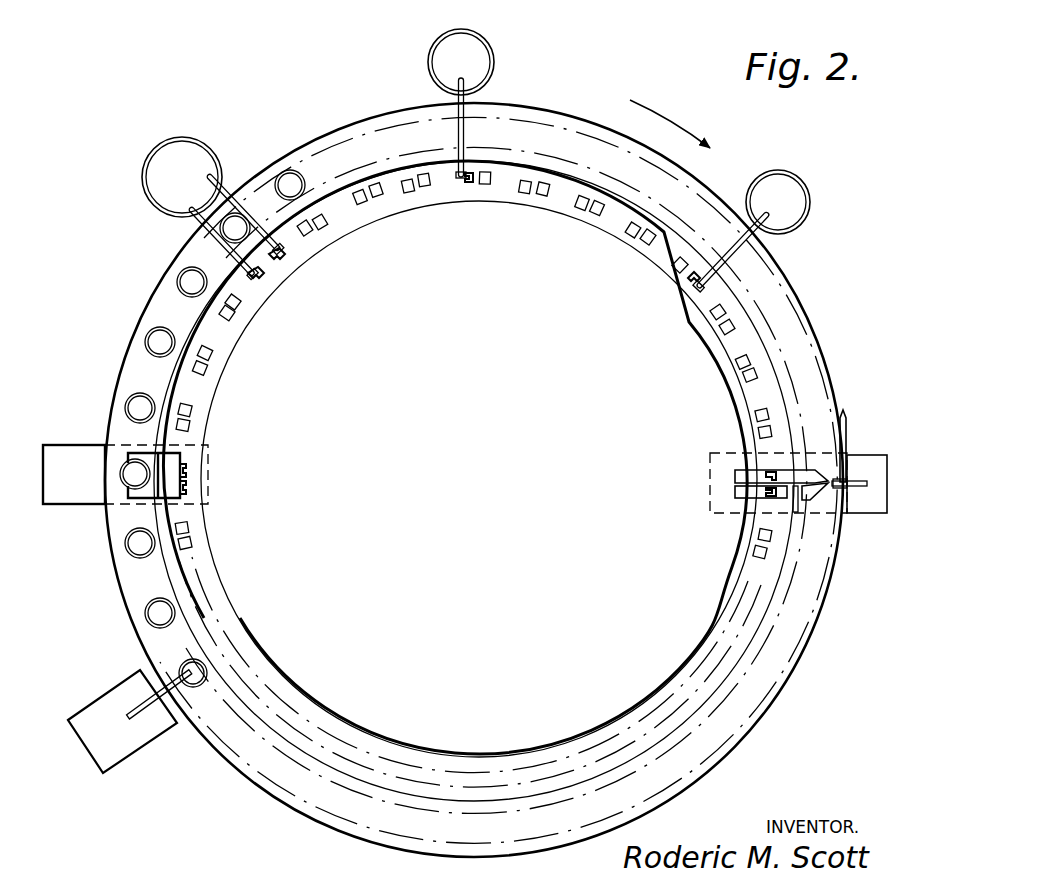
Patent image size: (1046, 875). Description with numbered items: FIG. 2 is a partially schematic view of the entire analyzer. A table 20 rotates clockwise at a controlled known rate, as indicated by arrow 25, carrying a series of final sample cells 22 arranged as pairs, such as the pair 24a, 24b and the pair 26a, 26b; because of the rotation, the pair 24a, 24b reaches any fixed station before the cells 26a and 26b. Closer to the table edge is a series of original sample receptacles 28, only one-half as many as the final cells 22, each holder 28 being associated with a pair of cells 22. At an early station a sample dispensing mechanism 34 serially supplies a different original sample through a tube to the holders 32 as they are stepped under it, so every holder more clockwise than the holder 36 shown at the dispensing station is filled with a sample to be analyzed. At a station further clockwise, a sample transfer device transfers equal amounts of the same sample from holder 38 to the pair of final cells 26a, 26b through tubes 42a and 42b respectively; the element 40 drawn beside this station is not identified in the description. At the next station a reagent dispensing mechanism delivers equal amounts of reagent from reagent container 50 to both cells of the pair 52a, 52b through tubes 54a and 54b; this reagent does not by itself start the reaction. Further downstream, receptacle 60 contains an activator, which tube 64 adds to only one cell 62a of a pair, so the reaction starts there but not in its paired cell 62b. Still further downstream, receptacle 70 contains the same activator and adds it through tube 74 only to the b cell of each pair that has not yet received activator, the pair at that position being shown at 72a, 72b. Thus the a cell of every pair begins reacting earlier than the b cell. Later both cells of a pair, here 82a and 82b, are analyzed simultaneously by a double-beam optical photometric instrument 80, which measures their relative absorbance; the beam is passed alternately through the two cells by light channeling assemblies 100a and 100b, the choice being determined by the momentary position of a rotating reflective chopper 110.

The table 20 is at (300, 822).
The final sample cells 22 is at (207, 368).
The final sample cell 24a is at (190, 424).
The final sample cell 24b is at (192, 409).
The arrow 25 is at (668, 118).
The final sample cell 26a is at (188, 487).
The final sample cell 26b is at (188, 470).
The original sample receptacles 28 is at (176, 277).
The holders 32 is at (145, 614).
The sample dispensing mechanism 34 is at (132, 743).
The holder 36 is at (180, 667).
The sample holder 38 is at (118, 474).
The block 40 is at (77, 495).
The tube 42a is at (143, 497).
The tube 42b is at (140, 450).
The reagent container 50 is at (178, 137).
The final cell 52a is at (262, 280).
The final cell 52b is at (282, 260).
The tube 54a is at (203, 228).
The tube 54b is at (247, 190).
The receptacle 60 is at (490, 46).
The cell 62a is at (466, 185).
The cell 62b is at (485, 187).
The tube 64 is at (458, 128).
The receptacle 70 is at (810, 192).
The aperture 72a is at (672, 268).
The hook 72b is at (690, 283).
The tube 74 is at (733, 262).
The double-beam optical photometric instrument 80 is at (855, 432).
The cell 82a is at (766, 468).
The cell 82b is at (768, 500).
The light channeling assembly 100a is at (732, 470).
The light channeling assembly 100b is at (732, 495).
The rotating reflective chopper 110 is at (862, 492).